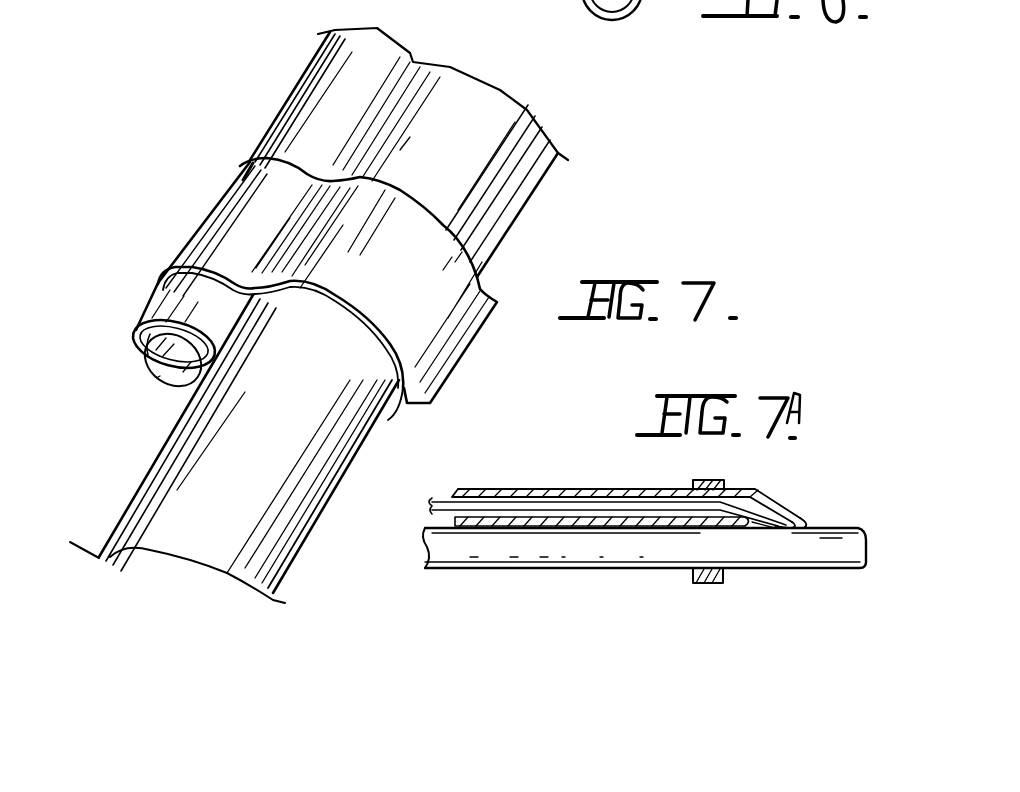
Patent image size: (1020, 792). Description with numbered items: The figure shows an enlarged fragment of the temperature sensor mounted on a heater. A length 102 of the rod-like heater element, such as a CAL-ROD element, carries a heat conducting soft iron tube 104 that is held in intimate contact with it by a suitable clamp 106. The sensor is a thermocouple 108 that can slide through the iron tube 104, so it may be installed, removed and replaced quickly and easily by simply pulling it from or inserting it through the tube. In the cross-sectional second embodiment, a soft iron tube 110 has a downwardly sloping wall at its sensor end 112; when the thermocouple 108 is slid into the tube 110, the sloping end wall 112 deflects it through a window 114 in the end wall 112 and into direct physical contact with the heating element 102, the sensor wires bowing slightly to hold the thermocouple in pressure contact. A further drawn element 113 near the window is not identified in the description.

In FIG. 7, the length of the rod-like heater element 102 is at (475, 198).
In FIG. 7A, the length of the rod-like heater element 102 is at (477, 552).
In FIG. 7, the heat conducting tube 104 is at (185, 305).
In FIG. 7, the clamp 106 is at (227, 222).
In FIG. 7A, the clamp 106 is at (690, 583).
In FIG. 7, the thermocouple 108 is at (167, 363).
In FIG. 7A, the thermocouple 108 is at (568, 506).
In FIG. 7A, the soft iron tube 110 is at (512, 488).
In FIG. 7A, the sloping end wall 112 is at (782, 512).
In FIG. 7A, the layer 113 is at (784, 528).
In FIG. 7A, the window 114 is at (762, 524).